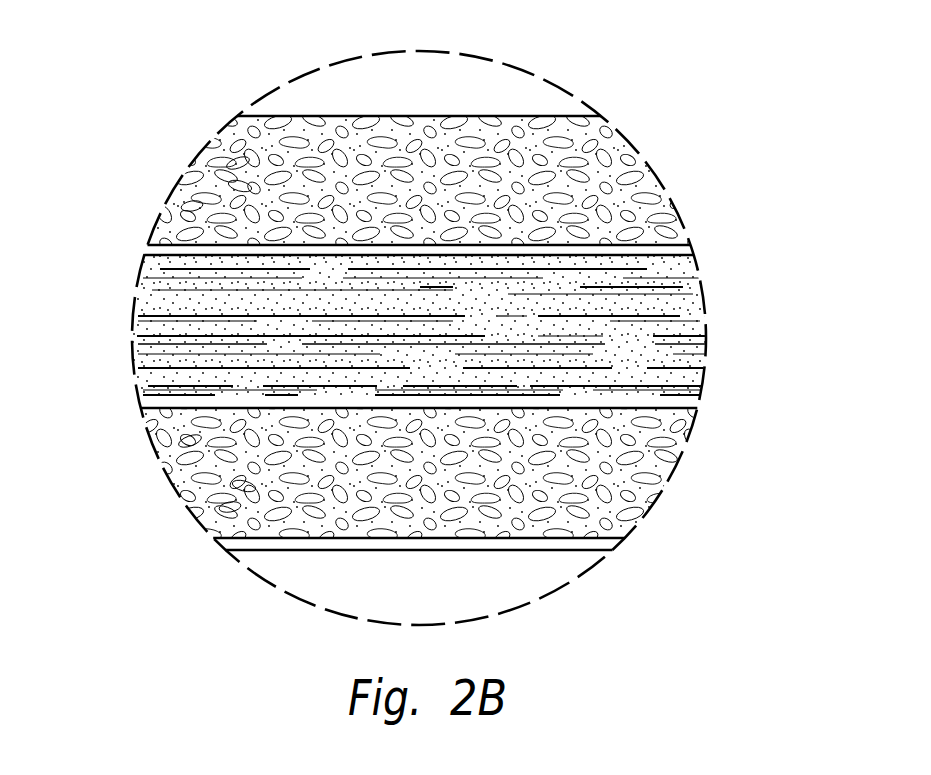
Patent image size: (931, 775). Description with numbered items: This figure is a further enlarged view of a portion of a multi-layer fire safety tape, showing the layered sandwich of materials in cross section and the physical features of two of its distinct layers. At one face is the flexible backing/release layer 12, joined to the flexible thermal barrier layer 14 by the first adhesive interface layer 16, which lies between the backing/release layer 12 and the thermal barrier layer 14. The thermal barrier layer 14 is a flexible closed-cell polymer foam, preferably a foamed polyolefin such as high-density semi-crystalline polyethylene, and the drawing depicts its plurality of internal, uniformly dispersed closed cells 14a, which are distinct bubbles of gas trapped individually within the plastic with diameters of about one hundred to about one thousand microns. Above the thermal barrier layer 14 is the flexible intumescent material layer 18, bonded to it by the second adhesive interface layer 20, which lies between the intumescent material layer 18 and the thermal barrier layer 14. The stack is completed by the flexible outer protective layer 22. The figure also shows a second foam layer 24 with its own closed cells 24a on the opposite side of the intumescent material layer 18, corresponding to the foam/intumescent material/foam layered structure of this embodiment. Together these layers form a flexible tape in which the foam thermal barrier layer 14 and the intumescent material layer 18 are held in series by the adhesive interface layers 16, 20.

The flexible backing/release layer 12 is at (612, 543).
The flexible thermal barrier layer 14 is at (640, 468).
The closed cells 14a is at (218, 505).
The first adhesive interface layer 16 is at (597, 537).
The flexible intumescent material layer 18 is at (682, 332).
The second adhesive interface layer 20 is at (673, 410).
The flexible outer protective layer 22 is at (693, 247).
The second porous layer 24 is at (606, 157).
The pores of second porous layer 24a is at (180, 205).